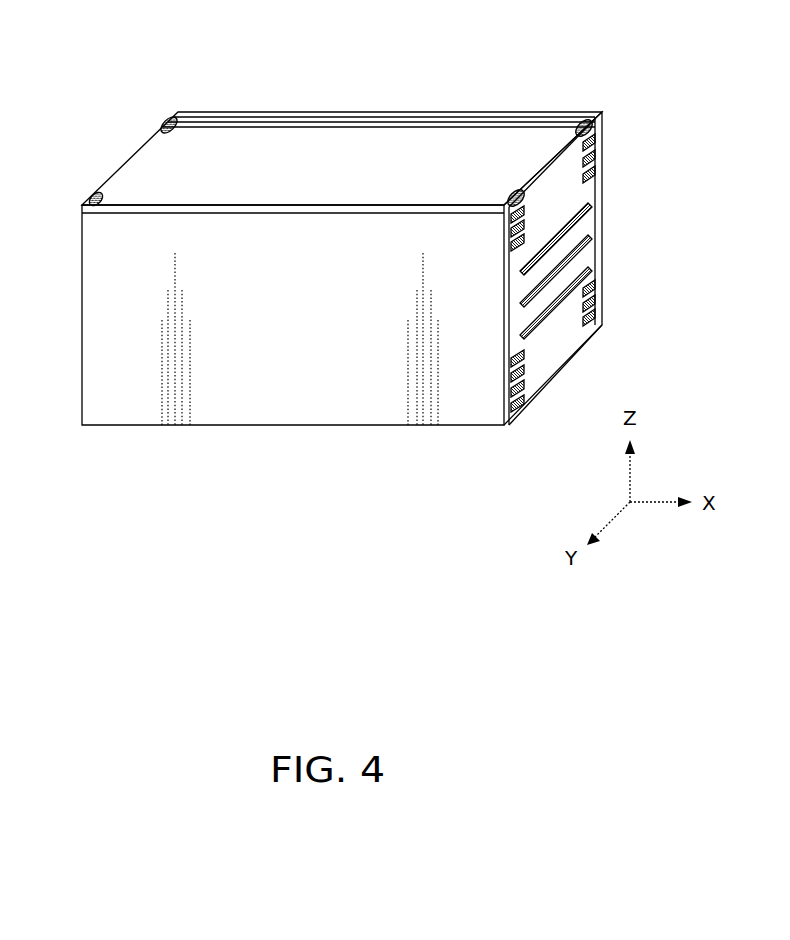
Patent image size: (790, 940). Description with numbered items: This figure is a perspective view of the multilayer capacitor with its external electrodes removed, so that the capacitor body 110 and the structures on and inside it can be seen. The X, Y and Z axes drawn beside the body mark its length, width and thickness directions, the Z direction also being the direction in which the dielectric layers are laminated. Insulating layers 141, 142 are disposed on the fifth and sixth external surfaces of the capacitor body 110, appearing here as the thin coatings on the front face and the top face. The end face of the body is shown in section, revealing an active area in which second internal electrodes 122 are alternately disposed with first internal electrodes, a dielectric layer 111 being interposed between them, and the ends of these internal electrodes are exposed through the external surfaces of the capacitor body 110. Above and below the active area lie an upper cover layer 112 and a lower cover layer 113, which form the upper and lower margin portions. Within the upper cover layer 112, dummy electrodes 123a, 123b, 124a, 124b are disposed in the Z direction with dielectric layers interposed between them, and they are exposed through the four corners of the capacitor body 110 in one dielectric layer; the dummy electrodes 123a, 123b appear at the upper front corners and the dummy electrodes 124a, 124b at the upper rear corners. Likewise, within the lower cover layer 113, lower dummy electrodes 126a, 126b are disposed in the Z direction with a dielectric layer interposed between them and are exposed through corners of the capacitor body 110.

The capacitor body 110 is at (278, 158).
The insulating layer 142 is at (347, 118).
The insulating layer 141 is at (293, 387).
The dielectric layer 111 is at (523, 317).
The upper cover layer 112 is at (553, 190).
The lower cover layer 113 is at (553, 323).
The second internal electrode 122 is at (590, 230).
The dummy electrode 124a is at (512, 192).
The dummy electrode 124b is at (585, 122).
The lower dummy electrode 126a is at (528, 392).
The lower dummy electrode 126b is at (600, 312).
The dummy electrode 123a is at (92, 195).
The dummy electrode 123b is at (164, 120).